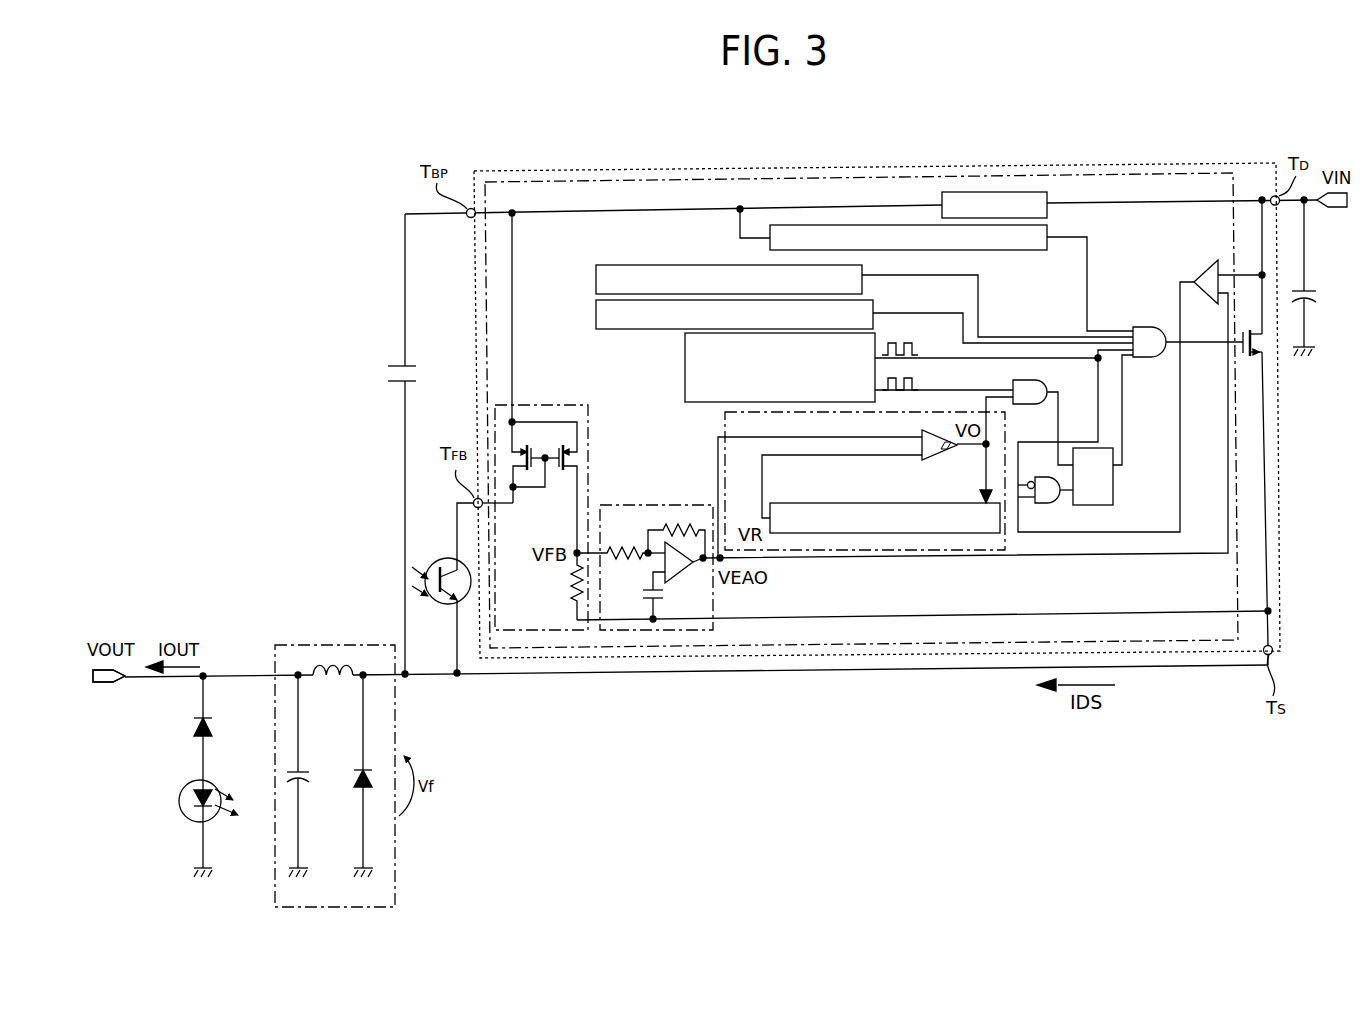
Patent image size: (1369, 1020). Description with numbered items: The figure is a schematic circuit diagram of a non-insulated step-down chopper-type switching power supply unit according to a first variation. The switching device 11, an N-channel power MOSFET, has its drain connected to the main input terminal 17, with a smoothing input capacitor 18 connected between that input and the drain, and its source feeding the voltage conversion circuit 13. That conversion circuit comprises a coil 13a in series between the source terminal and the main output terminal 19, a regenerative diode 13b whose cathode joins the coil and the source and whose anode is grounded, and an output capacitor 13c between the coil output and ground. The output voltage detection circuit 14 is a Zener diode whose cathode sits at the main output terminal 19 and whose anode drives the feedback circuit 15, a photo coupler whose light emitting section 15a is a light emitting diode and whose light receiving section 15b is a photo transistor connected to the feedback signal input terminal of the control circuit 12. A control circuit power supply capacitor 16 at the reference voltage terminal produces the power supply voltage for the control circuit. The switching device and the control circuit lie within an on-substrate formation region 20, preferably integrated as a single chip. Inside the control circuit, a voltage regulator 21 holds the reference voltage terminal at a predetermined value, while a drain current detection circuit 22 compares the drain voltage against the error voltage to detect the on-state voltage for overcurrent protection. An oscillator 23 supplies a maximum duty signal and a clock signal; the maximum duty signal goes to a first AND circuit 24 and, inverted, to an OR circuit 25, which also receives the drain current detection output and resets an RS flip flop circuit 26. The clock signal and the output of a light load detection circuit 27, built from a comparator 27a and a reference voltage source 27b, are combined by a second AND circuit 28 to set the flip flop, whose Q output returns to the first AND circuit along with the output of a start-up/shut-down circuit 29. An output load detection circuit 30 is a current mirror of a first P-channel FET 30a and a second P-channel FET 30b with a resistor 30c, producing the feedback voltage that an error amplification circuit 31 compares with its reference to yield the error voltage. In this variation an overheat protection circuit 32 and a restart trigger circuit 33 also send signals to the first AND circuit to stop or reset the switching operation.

The switching device 11 is at (1256, 343).
The control circuit 12 is at (1240, 488).
The voltage conversion circuit 13 is at (335, 745).
The coil 13a is at (327, 684).
The regenerative diode 13b is at (356, 784).
The output capacitor 13c is at (305, 786).
The output voltage detection circuit 14 is at (196, 729).
The feedback circuit 15 is at (294, 683).
The light emitting section 15a is at (194, 808).
The light receiving section 15b is at (438, 606).
The control circuit power supply capacitor 16 is at (396, 383).
The main input terminal 17 is at (1340, 209).
The smoothing input capacitor 18 is at (1316, 293).
The main output terminal 19 is at (105, 684).
The on-substrate formation region 20 is at (1281, 451).
The voltage regulator 21 is at (1047, 212).
The drain current detection circuit 22 is at (1197, 275).
The oscillator 23 is at (694, 403).
The first AND circuit 24 is at (1150, 327).
The OR circuit 25 is at (1040, 505).
The RS flip flop circuit 26 is at (1113, 497).
The light load detection circuit 27 is at (861, 514).
The comparator 27a is at (921, 436).
The reference voltage source 27b is at (915, 533).
The second AND circuit 28 is at (1040, 380).
The start-up/shut-down circuit 29 is at (1040, 250).
The output load detection circuit 30 is at (541, 421).
The first P-channel FET 30a is at (514, 490).
The second P-channel FET 30b is at (563, 470).
The resistor 30c is at (574, 592).
The error amplification circuit 31 is at (623, 505).
The overheat protection circuit 32 is at (596, 284).
The restart trigger circuit 33 is at (596, 323).